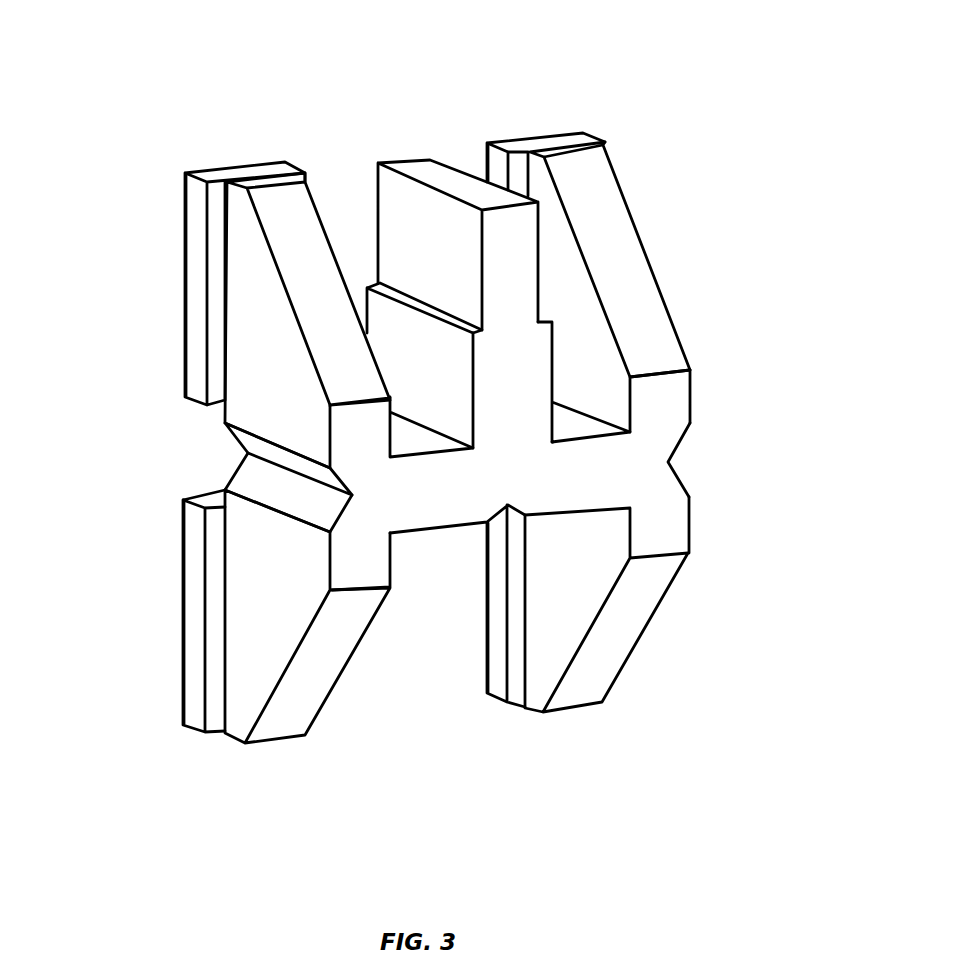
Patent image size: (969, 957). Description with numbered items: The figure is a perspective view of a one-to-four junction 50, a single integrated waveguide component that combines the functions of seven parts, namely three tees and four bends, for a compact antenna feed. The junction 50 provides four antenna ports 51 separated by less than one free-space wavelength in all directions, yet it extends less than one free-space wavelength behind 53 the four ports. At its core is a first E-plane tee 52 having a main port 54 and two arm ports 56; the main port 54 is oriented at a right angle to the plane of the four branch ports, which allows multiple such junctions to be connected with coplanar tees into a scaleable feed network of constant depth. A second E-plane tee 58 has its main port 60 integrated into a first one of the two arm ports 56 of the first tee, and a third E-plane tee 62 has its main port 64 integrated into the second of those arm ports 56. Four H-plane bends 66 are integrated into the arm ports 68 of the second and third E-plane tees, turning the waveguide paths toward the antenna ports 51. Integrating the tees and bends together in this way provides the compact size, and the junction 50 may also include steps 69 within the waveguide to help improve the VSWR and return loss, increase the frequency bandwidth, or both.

The one-to-four junction 50 is at (138, 82).
The antenna ports 51 is at (183, 198).
The first E-plane tee 52 is at (508, 467).
The behind 53 is at (773, 211).
The main port 54 is at (435, 172).
The arm ports 56 is at (558, 477).
The second E-plane tee 58 is at (365, 495).
The main port 60 is at (437, 490).
The third E-plane tee 62 is at (652, 463).
The main port 64 is at (588, 473).
The H-plane bends 66 is at (268, 300).
The arm ports 68 is at (355, 430).
The steps 69 is at (218, 243).